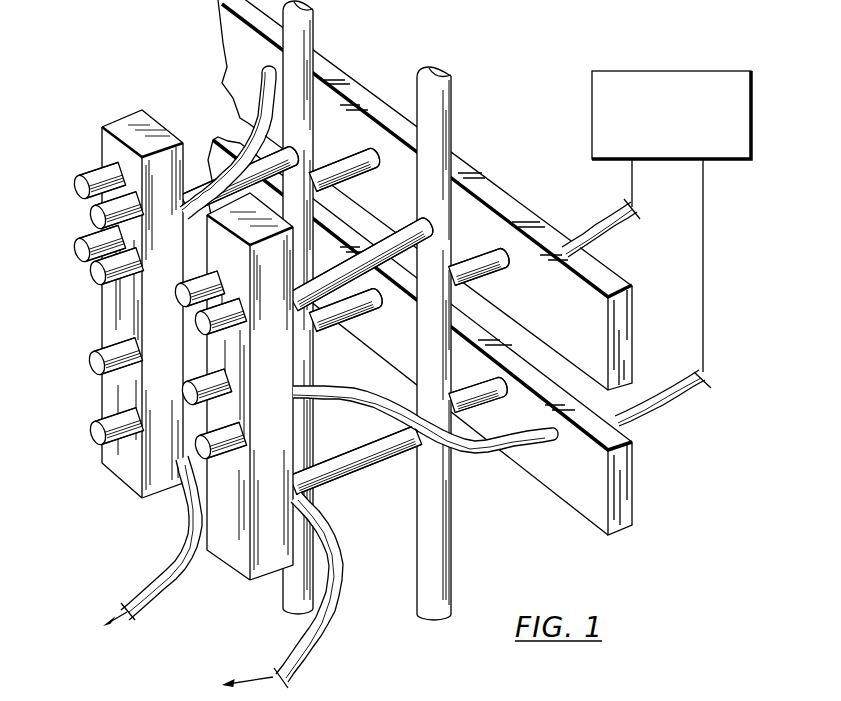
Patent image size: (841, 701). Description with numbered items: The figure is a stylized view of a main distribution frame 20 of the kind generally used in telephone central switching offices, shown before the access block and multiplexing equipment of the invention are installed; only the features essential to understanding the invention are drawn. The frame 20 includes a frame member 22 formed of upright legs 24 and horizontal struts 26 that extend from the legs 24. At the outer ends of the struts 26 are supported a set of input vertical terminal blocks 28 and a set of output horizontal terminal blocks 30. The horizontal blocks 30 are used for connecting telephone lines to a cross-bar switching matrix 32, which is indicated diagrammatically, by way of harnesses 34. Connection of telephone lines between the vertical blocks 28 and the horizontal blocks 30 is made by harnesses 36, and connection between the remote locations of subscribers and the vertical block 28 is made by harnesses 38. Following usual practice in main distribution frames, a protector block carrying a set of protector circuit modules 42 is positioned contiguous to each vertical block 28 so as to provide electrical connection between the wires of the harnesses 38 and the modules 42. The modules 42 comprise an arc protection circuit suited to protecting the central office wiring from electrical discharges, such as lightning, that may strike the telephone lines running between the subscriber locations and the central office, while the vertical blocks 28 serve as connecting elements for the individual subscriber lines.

The main distribution frame 20 is at (391, 347).
The frame member 22 is at (362, 310).
The upright legs 24 is at (313, 33).
The horizontal struts 26 is at (373, 150).
The input vertical terminal blocks 28 is at (128, 120).
The output horizontal terminal blocks 30 is at (612, 290).
The cross-bar switching matrix 32 is at (705, 70).
The harnesses 34 is at (605, 221).
The harnesses 36 is at (256, 140).
The harnesses 38 is at (173, 547).
The protector circuit modules 42 is at (97, 280).